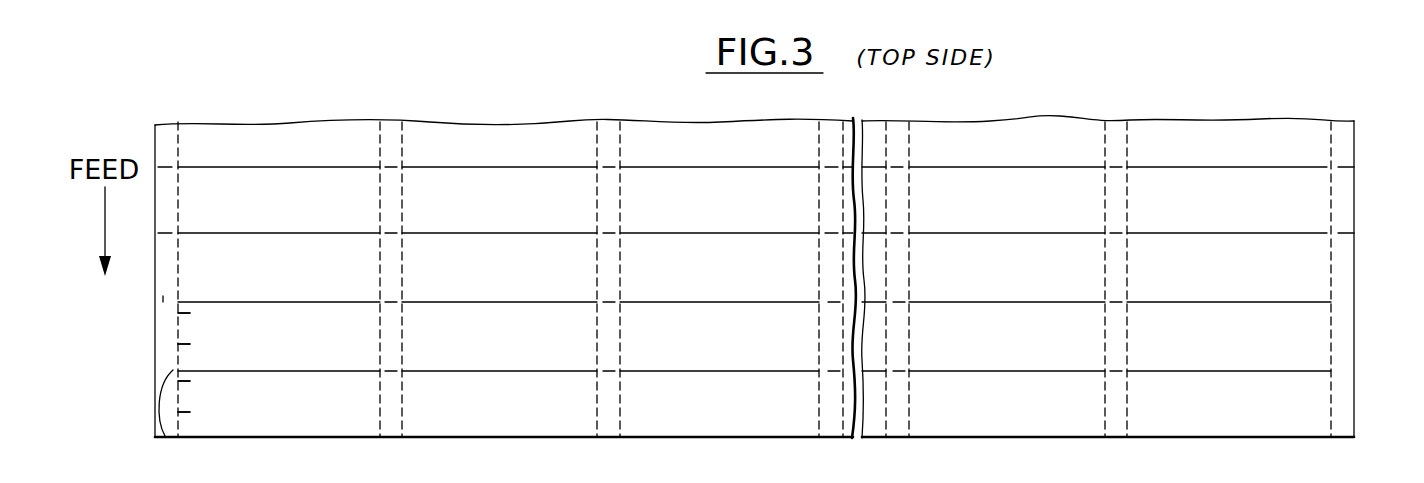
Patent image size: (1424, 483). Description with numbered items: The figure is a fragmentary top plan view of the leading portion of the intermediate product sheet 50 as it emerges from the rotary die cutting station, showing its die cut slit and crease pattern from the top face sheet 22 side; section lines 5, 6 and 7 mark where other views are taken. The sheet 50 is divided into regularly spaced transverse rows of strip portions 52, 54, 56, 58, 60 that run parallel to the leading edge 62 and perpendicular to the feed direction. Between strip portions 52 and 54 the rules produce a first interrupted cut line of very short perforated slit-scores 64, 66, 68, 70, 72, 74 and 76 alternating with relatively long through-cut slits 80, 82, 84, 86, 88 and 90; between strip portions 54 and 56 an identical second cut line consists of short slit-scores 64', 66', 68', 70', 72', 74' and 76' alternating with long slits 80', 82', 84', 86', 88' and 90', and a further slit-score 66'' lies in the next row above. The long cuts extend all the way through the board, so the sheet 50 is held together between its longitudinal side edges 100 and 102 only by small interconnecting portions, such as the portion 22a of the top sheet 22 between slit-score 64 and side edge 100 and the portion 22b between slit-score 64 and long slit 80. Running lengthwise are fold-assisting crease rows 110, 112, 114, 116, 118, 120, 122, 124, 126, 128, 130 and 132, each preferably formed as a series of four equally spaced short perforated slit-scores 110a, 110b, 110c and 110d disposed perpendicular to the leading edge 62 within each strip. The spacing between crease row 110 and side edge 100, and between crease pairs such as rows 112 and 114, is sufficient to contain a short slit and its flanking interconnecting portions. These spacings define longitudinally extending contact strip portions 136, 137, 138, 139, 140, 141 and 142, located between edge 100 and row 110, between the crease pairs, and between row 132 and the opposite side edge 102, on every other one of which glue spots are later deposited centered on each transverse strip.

The top face sheet 22 is at (320, 424).
The portion of top sheet 22a is at (160, 405).
The portion of top paper sheet 22b is at (171, 350).
The intermediate product sheet 50 is at (489, 110).
The strip portion 52 is at (1312, 405).
The strip portion 54 is at (1312, 348).
The strip portion 56 is at (1312, 273).
The strip portion 58 is at (1310, 217).
The strip portion 60 is at (1322, 148).
The leading edge 62 is at (492, 438).
The perforated slit-score 64 is at (126, 353).
The perforated slit-score 64' is at (121, 293).
The perforated slit-score 66 is at (361, 396).
The perforated slit-score 66' is at (439, 286).
The tab 66'' is at (356, 216).
The perforated slit-score 68 is at (575, 392).
The perforated slit-score 68' is at (644, 286).
The perforated slit-score 70 is at (802, 389).
The perforated slit-score 70' is at (809, 321).
The perforated slit-score 72 is at (918, 390).
The perforated slit-score 72' is at (923, 286).
The perforated slit-score 74 is at (1085, 390).
The perforated slit-score 74' is at (1150, 286).
The perforated slit-score 76 is at (1377, 367).
The perforated slit-score 76' is at (1378, 297).
The through-cut slit 80 is at (326, 353).
The through-cut slit 80' is at (327, 286).
The through-cut slit 82 is at (523, 353).
The through-cut slit 82' is at (524, 286).
The through-cut slit 84 is at (728, 353).
The through-cut slit 84' is at (729, 286).
The through-cut slit 86 is at (910, 353).
The through-cut slit 86' is at (911, 272).
The through-cut slit 88 is at (1030, 353).
The through-cut slit 88' is at (1031, 286).
The through-cut slit 90 is at (1231, 353).
The through-cut slit 90' is at (1232, 286).
The longitudinal side edge 100 is at (155, 140).
The longitudinal side edge 102 is at (1357, 178).
The fold-assisting crease row 110 is at (172, 430).
The perforated slit-score 110a is at (178, 357).
The perforated slit-score 110b is at (210, 379).
The perforated slit-score 110c is at (178, 326).
The perforated slit-score 110d is at (211, 348).
The fold-assisting crease row 112 is at (382, 434).
The fold-assisting crease row 114 is at (404, 437).
The fold-assisting crease row 116 is at (586, 431).
The fold-assisting crease row 118 is at (631, 432).
The fold-assisting crease row 120 is at (810, 434).
The fold-assisting crease row 122 is at (835, 433).
The fold-assisting crease row 124 is at (885, 434).
The fold-assisting crease row 126 is at (918, 425).
The fold-assisting crease row 128 is at (1090, 432).
The fold-assisting crease row 130 is at (1137, 418).
The fold-assisting crease row 132 is at (1323, 434).
The contact strip portion 136 is at (167, 128).
The contact strip portion 137 is at (392, 125).
The contact strip portion 138 is at (607, 123).
The contact strip portion 139 is at (832, 123).
The contact strip portion 140 is at (897, 125).
The contact strip portion 141 is at (1115, 125).
The contact strip portion 142 is at (1343, 128).
The section line 5- 5 is at (186, 276).
The section line 6- 6 is at (402, 224).
The section line 7- 7 is at (148, 370).